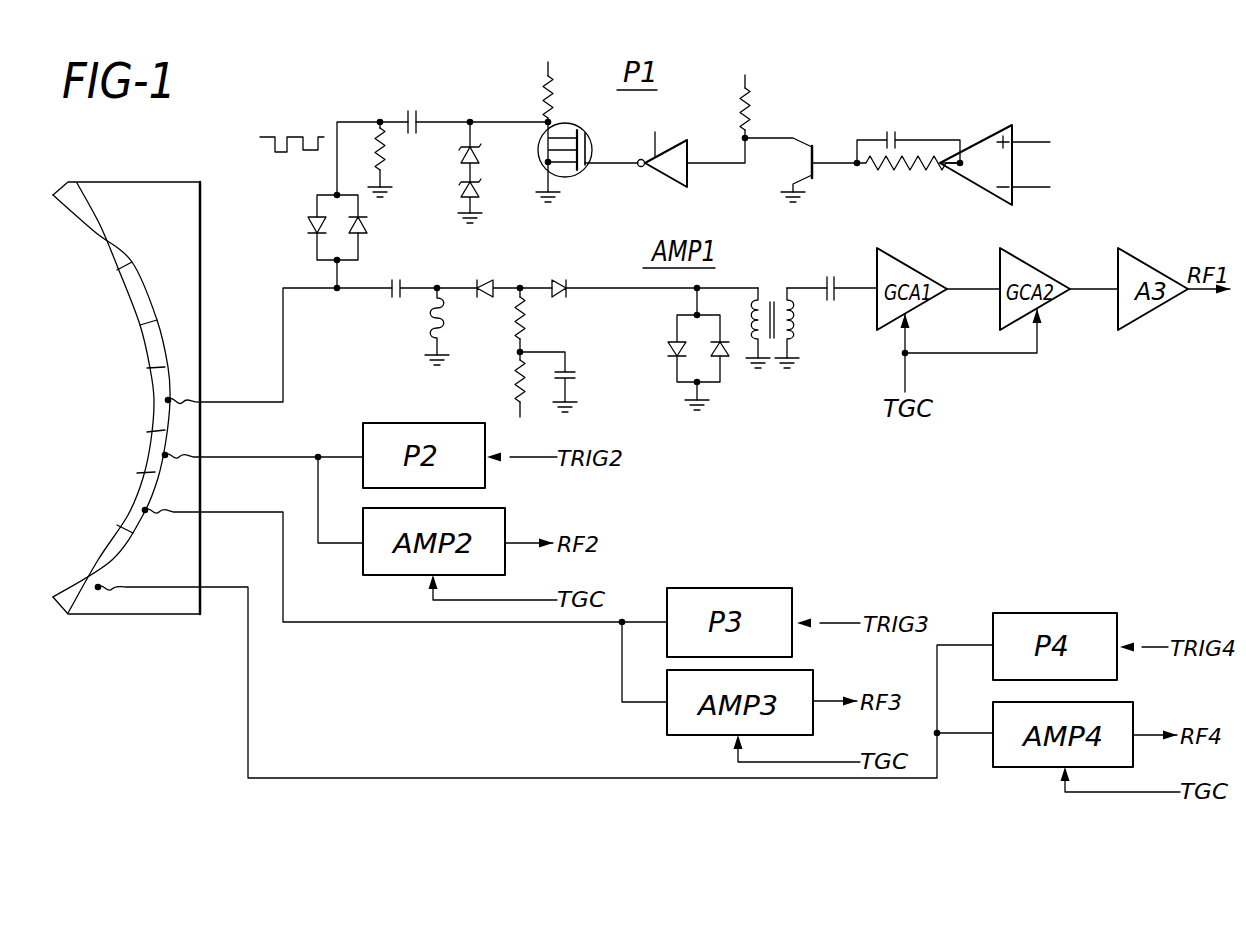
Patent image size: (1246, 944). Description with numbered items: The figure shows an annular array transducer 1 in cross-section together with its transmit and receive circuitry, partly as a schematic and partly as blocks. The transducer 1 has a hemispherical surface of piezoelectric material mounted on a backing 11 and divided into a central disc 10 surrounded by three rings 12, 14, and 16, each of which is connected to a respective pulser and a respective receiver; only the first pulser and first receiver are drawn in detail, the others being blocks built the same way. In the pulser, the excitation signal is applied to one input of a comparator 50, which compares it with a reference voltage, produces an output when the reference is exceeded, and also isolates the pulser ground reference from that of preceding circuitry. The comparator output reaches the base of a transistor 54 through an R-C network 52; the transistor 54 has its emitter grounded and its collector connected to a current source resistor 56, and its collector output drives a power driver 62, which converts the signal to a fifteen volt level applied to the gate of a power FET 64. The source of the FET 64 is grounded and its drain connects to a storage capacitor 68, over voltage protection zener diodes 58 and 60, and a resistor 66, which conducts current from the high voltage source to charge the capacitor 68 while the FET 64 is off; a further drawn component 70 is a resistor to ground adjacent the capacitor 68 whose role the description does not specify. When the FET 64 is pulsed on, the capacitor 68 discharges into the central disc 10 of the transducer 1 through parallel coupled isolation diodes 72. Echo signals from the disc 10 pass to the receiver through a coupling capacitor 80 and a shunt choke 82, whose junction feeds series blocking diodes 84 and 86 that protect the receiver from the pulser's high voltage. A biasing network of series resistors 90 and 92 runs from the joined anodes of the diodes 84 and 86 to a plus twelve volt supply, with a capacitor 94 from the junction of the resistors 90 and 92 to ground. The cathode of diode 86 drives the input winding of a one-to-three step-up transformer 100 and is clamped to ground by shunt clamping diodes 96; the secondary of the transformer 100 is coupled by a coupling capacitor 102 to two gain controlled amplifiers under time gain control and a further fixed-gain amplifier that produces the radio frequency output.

The annular array transducer 1 is at (170, 230).
The central disc 10 is at (156, 402).
The backing 11 is at (184, 278).
The ring 12 is at (150, 353).
The ring 14 is at (137, 302).
The ring 16 is at (104, 247).
The comparator 50 is at (973, 141).
The R-C network 52 is at (880, 131).
The transistor 54 is at (808, 162).
The current source resistor 56 is at (754, 104).
The zener diode 58 is at (480, 155).
The zener diode 60 is at (480, 193).
The power driver 62 is at (688, 181).
The power FET 64 is at (573, 175).
The resistor 66 is at (543, 90).
The storage capacitor 68 is at (403, 117).
The resistor 70 is at (387, 172).
The isolation diodes 72 is at (333, 214).
The coupling capacitor 80 is at (390, 295).
The shunt choke 82 is at (430, 330).
The blocking diode 84 is at (483, 280).
The blocking diode 86 is at (560, 280).
The resistor 90 is at (533, 338).
The resistor 92 is at (518, 400).
The capacitor 94 is at (577, 370).
The shunt clamping diodes 96 is at (690, 340).
The step-up transformer 100 is at (795, 394).
The coupling capacitor 102 is at (822, 306).